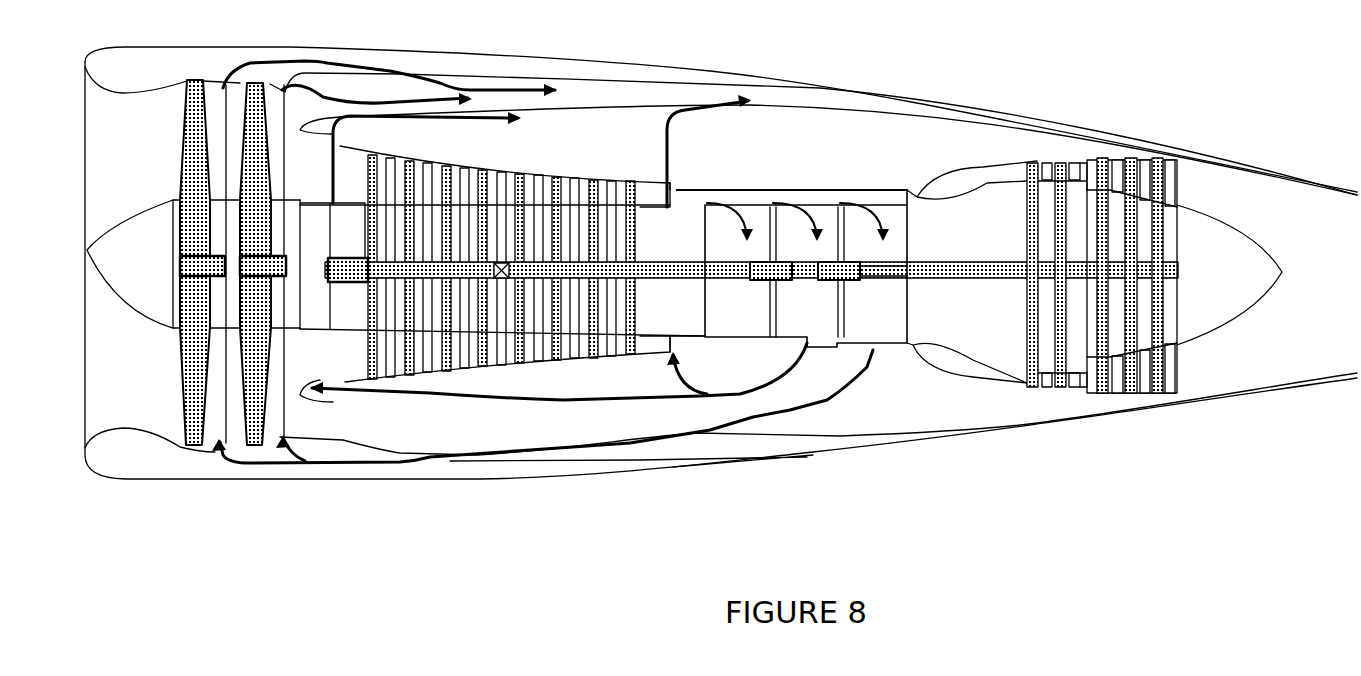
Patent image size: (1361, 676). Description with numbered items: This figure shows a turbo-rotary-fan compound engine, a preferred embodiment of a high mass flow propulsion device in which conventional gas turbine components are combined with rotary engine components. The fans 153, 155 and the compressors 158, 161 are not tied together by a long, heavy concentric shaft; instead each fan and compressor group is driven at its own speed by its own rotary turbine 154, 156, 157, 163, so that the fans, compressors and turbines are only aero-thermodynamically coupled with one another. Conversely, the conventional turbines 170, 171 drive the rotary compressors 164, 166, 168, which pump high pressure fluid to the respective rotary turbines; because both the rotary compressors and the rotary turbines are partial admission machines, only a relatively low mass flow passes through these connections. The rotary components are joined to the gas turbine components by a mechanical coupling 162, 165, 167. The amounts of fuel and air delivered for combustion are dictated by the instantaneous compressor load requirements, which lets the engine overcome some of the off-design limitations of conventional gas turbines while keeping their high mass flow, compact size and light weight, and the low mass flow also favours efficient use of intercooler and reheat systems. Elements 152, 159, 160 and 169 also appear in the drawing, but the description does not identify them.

The nacelle 152 is at (150, 407).
The fan 153 is at (197, 300).
The rotary turbine 154 is at (223, 303).
The fan 155 is at (257, 307).
The rotary turbine 156 is at (283, 307).
The rotary turbine 157 is at (337, 307).
The compressor 158 is at (390, 268).
The compressor blades 159 is at (463, 290).
The bearing 160 is at (500, 280).
The compressor 161 is at (553, 358).
The mechanical coupling 162 is at (653, 280).
The rotary turbine 163 is at (680, 313).
The rotary compressor 164 is at (743, 313).
The mechanical coupling 165 is at (760, 335).
The rotary compressor 166 is at (817, 313).
The mechanical coupling 167 is at (873, 297).
The rotary compressor 168 is at (900, 357).
The turbine nozzle 169 is at (963, 363).
The turbine 170 is at (1073, 387).
The turbine 171 is at (1137, 420).